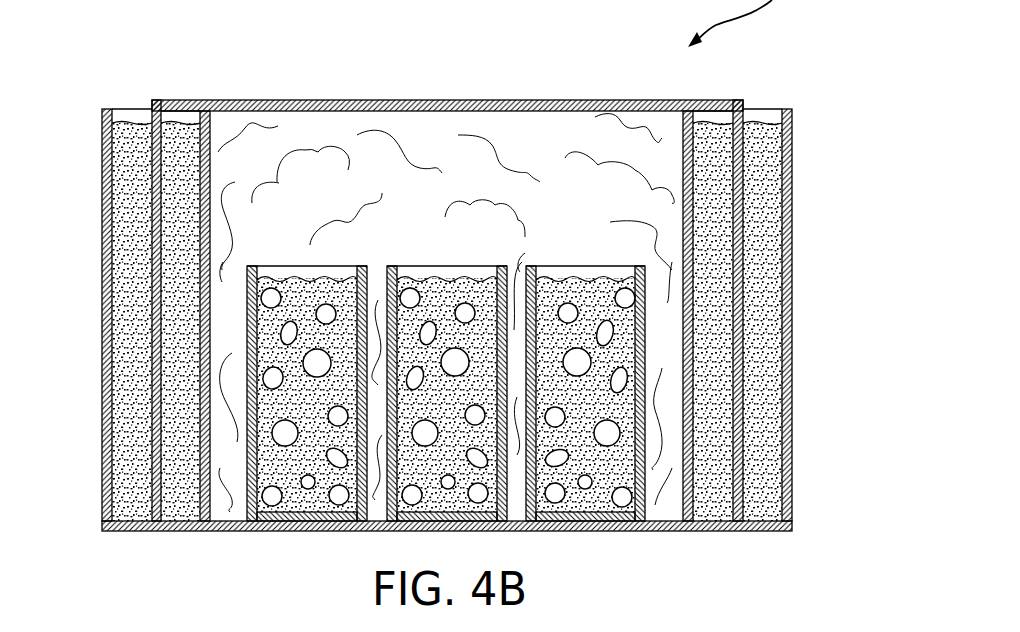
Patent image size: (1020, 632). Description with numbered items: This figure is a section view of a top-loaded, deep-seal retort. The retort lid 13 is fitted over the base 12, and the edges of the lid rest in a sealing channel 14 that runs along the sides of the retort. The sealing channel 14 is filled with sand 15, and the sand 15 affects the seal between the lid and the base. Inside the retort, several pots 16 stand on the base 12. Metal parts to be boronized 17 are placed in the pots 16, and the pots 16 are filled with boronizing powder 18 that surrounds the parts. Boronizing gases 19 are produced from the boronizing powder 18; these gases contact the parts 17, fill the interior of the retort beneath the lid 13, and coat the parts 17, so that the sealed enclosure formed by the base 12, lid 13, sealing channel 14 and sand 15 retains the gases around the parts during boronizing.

The base 12 is at (659, 531).
The retort lid 13 is at (545, 100).
The sealing channel 14 is at (104, 182).
The sand 15 is at (763, 198).
The pots 16 is at (205, 428).
The metal parts to be boronized 17 is at (276, 378).
The boronizing powder 18 is at (293, 500).
The boronizing gases 19 is at (314, 165).